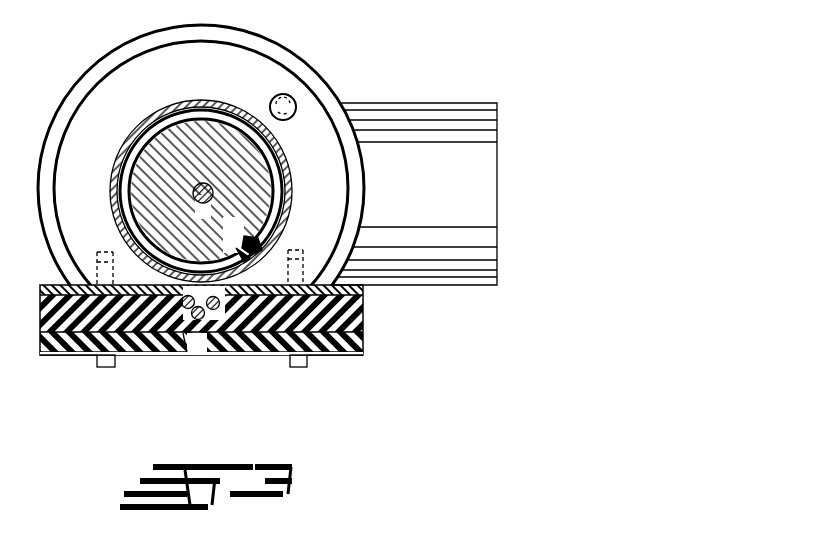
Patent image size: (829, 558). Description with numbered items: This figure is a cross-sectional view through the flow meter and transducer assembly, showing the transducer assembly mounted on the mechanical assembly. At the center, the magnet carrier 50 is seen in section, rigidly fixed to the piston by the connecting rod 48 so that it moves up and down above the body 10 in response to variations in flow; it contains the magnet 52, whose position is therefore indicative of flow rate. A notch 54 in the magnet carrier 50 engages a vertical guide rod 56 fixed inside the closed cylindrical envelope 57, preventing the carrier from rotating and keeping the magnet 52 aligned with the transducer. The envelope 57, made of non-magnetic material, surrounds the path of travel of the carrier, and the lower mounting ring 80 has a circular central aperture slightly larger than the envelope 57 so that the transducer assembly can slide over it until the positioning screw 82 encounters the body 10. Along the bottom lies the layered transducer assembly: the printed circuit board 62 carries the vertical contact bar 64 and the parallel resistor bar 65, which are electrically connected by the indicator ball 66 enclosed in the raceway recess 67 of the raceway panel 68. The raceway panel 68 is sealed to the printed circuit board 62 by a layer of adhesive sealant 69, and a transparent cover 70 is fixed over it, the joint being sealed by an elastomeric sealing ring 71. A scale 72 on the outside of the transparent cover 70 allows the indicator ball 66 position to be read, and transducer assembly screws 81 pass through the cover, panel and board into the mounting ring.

The body 10 is at (343, 102).
The connecting rod 48 is at (204, 183).
The magnet carrier 50 is at (283, 159).
The magnet 52 is at (232, 224).
The notch 54 is at (247, 242).
The guide rod 56 is at (248, 254).
The envelope 57 is at (163, 112).
The printed circuit board 62 is at (233, 340).
The contact bar 64 is at (226, 330).
The resistor bar 65 is at (182, 345).
The indicator ball 66 is at (203, 322).
The raceway recess 67 is at (191, 320).
The raceway panel 68 is at (366, 324).
The adhesive sealant 69 is at (365, 312).
The transparent cover 70 is at (366, 348).
The elastomeric sealing ring 71 is at (298, 356).
The scale 72 is at (86, 356).
The lower mounting ring 80 is at (281, 60).
The transducer assembly screws 81 is at (105, 368).
The positioning screw 82 is at (302, 93).